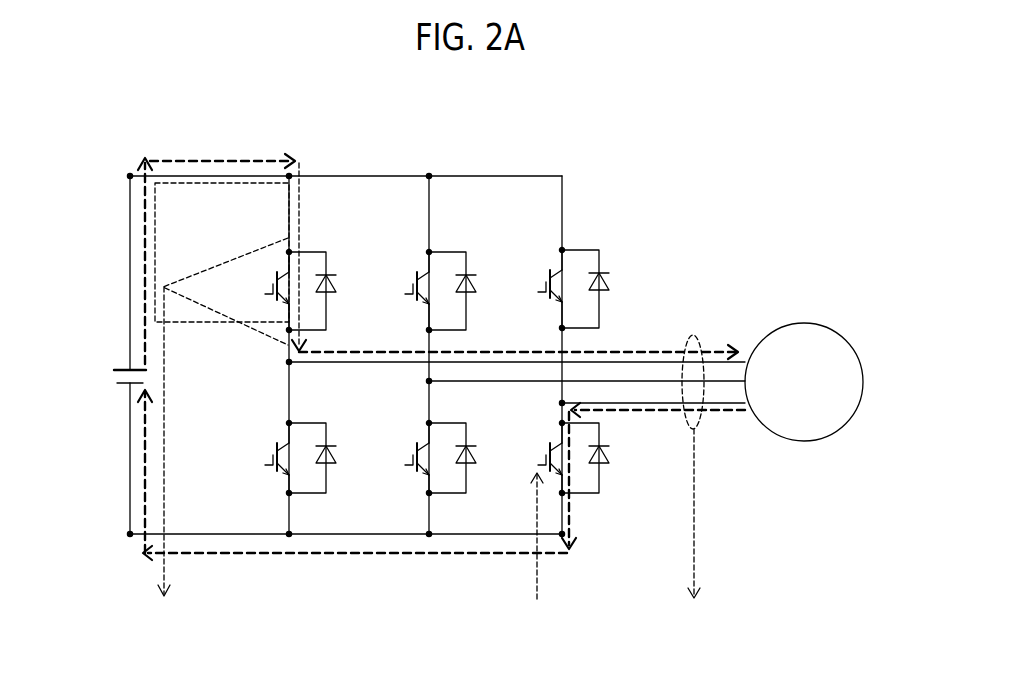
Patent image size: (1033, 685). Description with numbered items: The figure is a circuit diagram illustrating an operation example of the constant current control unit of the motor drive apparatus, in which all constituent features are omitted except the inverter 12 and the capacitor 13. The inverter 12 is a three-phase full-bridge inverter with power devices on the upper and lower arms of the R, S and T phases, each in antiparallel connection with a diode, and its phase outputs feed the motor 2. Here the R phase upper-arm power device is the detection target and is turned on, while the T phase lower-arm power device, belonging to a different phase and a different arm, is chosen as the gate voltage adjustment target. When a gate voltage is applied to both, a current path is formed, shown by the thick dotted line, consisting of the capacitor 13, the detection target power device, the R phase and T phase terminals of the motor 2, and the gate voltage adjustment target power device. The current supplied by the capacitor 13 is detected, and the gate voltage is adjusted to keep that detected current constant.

The motor 2 is at (788, 322).
The inverter 12 is at (470, 112).
The capacitor 13 is at (104, 366).